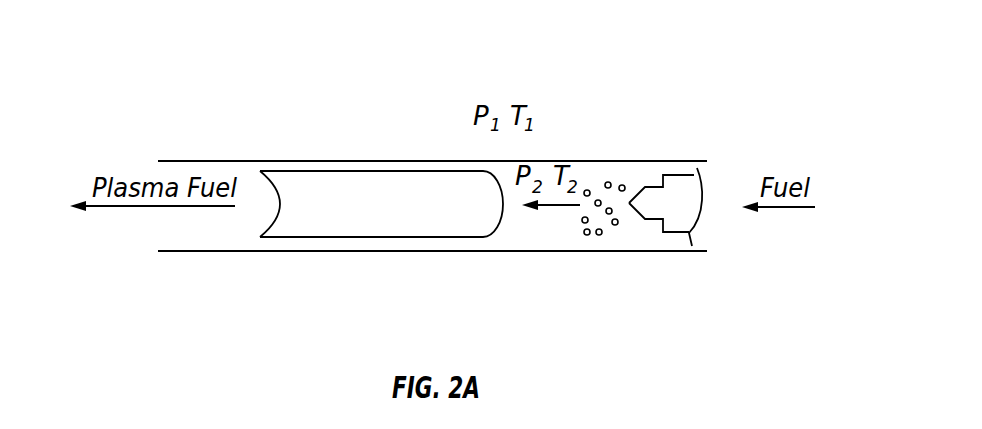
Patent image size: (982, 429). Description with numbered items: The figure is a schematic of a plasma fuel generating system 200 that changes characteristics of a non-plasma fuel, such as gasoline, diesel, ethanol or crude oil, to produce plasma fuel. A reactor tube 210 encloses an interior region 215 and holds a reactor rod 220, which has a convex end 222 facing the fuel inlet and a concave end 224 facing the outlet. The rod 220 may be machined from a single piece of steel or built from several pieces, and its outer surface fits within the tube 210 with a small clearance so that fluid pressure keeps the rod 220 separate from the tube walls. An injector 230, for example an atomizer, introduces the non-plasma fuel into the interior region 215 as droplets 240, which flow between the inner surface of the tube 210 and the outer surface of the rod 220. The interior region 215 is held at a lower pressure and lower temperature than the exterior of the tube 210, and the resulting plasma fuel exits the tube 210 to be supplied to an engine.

The plasma fuel generating system 200 is at (322, 139).
The reactor tube 210 is at (535, 160).
The interior region 215 is at (624, 185).
The reactor rod 220 is at (393, 218).
The convex end 222 is at (500, 222).
The concave end 224 is at (276, 209).
The injector 230 is at (672, 233).
The fuel spray droplets 240 is at (587, 235).